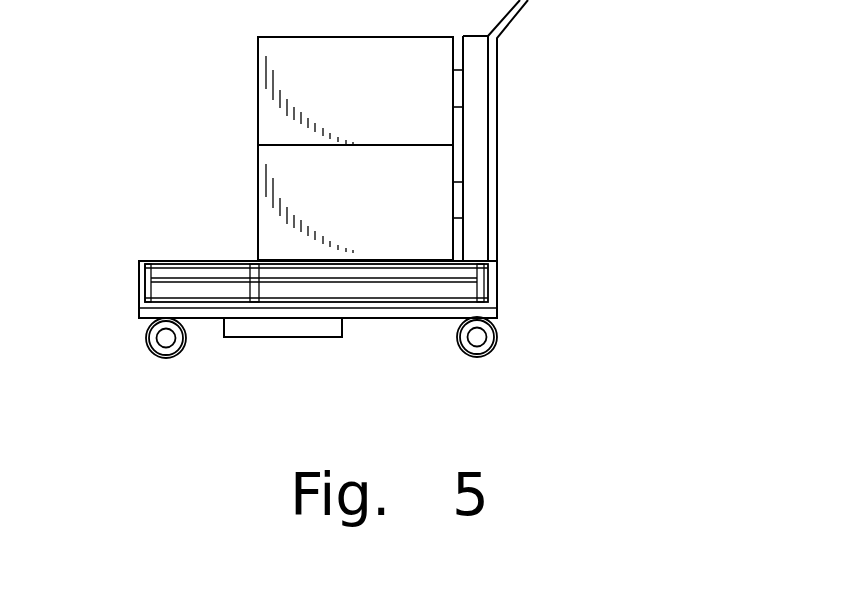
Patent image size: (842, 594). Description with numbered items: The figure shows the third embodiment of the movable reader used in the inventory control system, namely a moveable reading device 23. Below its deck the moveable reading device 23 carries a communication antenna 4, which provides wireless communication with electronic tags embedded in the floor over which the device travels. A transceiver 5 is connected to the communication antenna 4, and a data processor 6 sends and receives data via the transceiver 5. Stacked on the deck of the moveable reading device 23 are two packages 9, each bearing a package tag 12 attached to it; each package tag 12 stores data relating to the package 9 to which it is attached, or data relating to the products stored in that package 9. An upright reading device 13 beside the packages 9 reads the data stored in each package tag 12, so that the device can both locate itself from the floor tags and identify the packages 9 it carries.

The communication antenna 4 is at (281, 338).
The transceiver 5 is at (173, 292).
The data processor 6 is at (400, 288).
The package 9 is at (388, 101).
The package tag 12 is at (455, 93).
The reading device 13 is at (475, 229).
The moveable reading device 23 is at (497, 148).